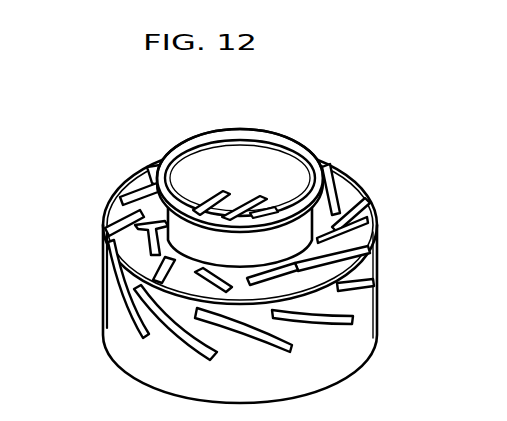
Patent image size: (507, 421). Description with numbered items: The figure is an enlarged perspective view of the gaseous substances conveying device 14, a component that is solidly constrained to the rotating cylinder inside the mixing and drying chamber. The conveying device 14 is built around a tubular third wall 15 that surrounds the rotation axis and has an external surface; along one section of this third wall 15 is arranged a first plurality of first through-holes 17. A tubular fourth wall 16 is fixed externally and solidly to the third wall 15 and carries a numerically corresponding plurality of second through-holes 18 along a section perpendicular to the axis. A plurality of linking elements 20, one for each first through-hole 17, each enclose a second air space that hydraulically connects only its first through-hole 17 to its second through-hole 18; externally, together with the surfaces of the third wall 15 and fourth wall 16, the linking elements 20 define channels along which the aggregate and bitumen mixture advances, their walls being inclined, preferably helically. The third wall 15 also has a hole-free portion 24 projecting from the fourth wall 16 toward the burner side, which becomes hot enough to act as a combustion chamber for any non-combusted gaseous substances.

The gaseous substances conveying device 14 is at (422, 138).
The third wall 15 is at (185, 238).
The fourth wall 16 is at (358, 338).
The first through-holes 17 is at (248, 196).
The second through-holes 18 is at (263, 340).
The linking elements 20 is at (350, 213).
The portion of the third wall 24 is at (299, 243).